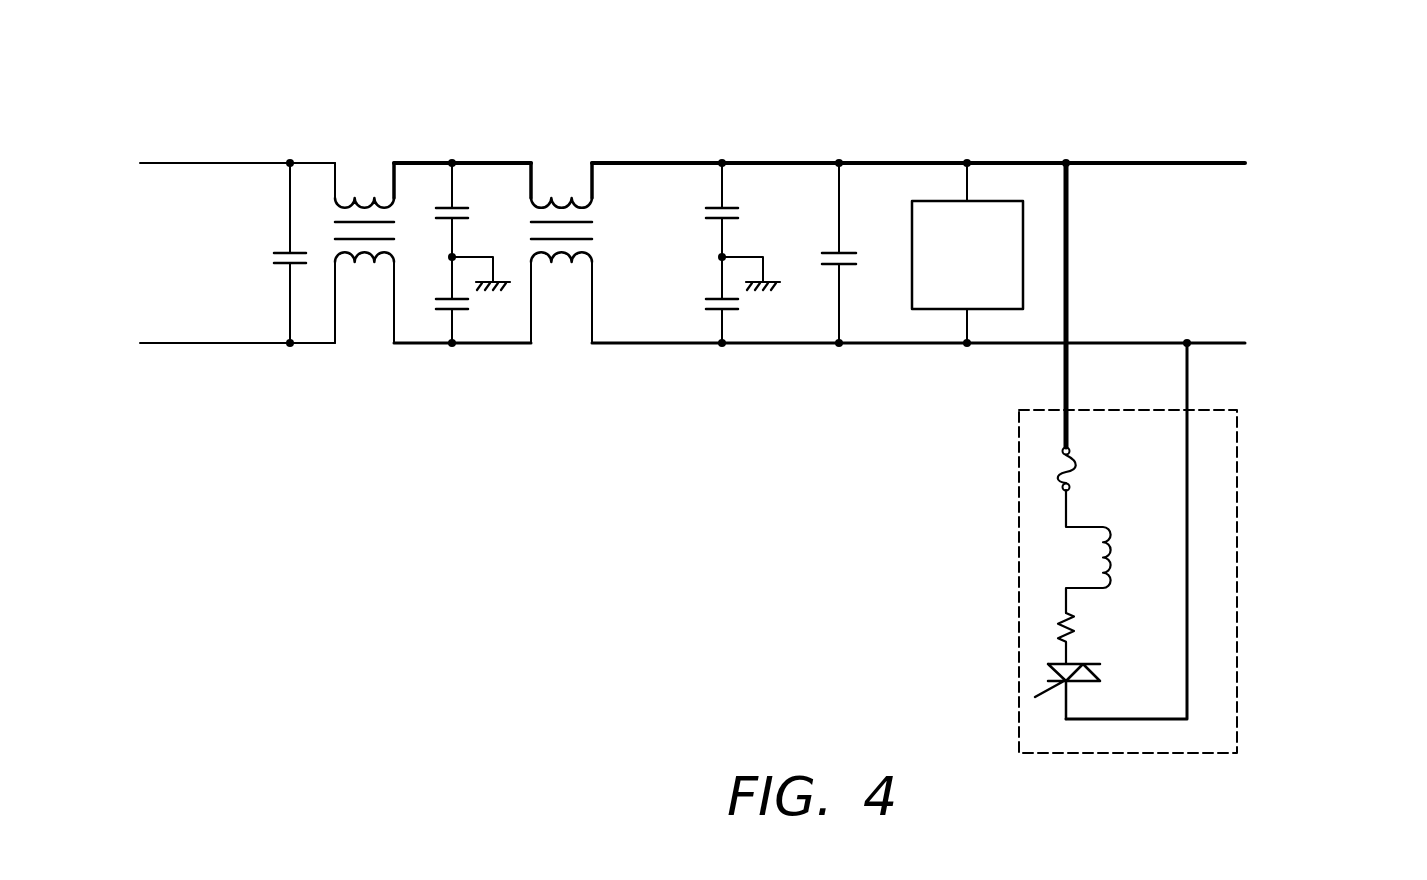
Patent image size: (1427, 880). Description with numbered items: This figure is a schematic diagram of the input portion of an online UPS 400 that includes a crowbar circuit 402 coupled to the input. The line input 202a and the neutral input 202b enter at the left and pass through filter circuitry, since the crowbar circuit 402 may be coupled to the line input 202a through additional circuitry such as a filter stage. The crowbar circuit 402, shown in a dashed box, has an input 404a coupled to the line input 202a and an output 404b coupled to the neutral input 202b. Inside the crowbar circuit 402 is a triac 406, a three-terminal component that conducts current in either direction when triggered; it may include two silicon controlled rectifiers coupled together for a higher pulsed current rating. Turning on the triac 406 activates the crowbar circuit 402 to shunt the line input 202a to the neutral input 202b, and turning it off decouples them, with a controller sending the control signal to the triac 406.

The line input 202a is at (154, 162).
The neutral input 202b is at (154, 345).
The online UPS 400 is at (736, 418).
The crowbar circuit 402 is at (1153, 581).
The input 404a is at (1065, 410).
The output 404b is at (1188, 410).
The triac 406 is at (1062, 671).